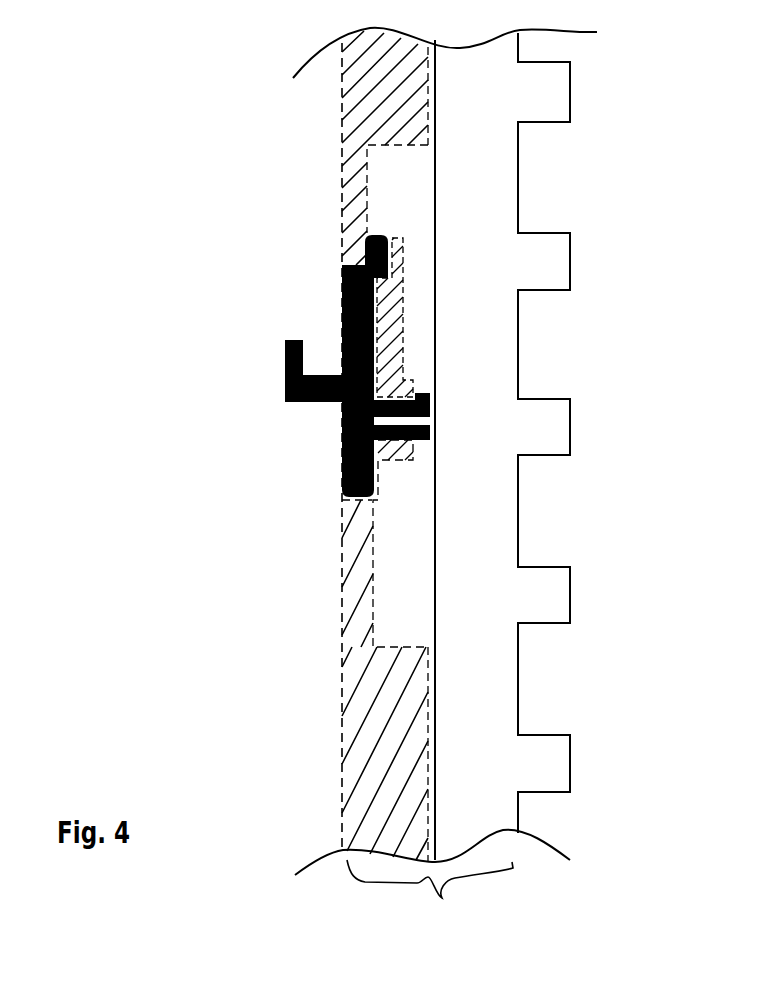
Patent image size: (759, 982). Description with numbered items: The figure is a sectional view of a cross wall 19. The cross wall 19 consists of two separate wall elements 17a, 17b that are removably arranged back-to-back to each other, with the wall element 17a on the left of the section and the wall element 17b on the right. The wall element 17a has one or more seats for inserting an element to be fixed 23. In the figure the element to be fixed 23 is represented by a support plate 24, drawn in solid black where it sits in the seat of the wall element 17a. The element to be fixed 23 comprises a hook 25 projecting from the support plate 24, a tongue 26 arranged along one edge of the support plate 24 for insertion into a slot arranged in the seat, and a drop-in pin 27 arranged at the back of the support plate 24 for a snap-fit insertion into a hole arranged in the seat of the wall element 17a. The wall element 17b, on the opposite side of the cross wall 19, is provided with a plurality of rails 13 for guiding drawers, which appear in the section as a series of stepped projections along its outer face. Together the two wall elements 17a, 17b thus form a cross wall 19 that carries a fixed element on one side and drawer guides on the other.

The rails 13 is at (620, 258).
The wall element 17a is at (375, 680).
The wall element 17b is at (478, 695).
The cross wall 19 is at (430, 890).
The element to be fixed 23 is at (425, 362).
The support plate 24 is at (342, 453).
The hook 25 is at (285, 352).
The tongue 26 is at (368, 238).
The drop-in pin 27 is at (430, 399).